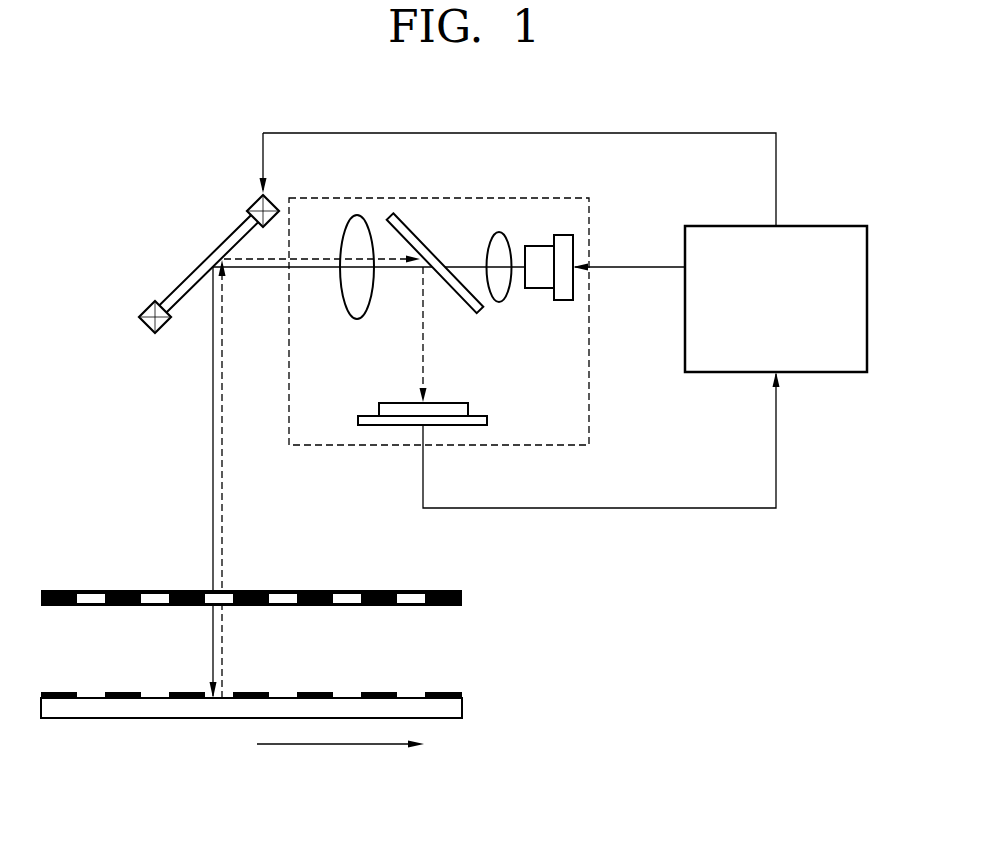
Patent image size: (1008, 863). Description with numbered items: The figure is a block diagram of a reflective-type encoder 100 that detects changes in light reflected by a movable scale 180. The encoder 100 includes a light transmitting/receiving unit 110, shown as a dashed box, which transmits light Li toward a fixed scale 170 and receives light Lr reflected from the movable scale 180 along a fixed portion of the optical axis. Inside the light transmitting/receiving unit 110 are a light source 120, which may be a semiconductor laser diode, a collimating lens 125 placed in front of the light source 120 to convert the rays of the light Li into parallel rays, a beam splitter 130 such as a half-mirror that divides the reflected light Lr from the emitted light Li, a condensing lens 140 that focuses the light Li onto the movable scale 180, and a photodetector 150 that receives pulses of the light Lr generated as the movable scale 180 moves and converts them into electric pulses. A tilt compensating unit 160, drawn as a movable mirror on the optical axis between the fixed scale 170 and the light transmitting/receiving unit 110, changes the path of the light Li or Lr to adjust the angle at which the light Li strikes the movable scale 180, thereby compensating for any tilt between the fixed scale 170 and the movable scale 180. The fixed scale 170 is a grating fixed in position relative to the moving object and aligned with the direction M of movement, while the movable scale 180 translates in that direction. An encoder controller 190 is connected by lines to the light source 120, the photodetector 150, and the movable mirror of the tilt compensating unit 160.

The encoder 100 is at (866, 124).
The light transmitting/receiving unit 110 is at (589, 419).
The light source 120 is at (564, 234).
The collimating lens 125 is at (500, 231).
The beam splitter 130 is at (410, 228).
The condensing lens 140 is at (357, 215).
The photodetector 150 is at (378, 425).
The tilt compensating unit 160 is at (187, 286).
The fixed scale 170 is at (462, 598).
The movable scale 180 is at (462, 708).
The encoder controller 190 is at (720, 226).
The light Li is at (212, 500).
The light Lr is at (223, 523).
The direction of movement M is at (336, 747).